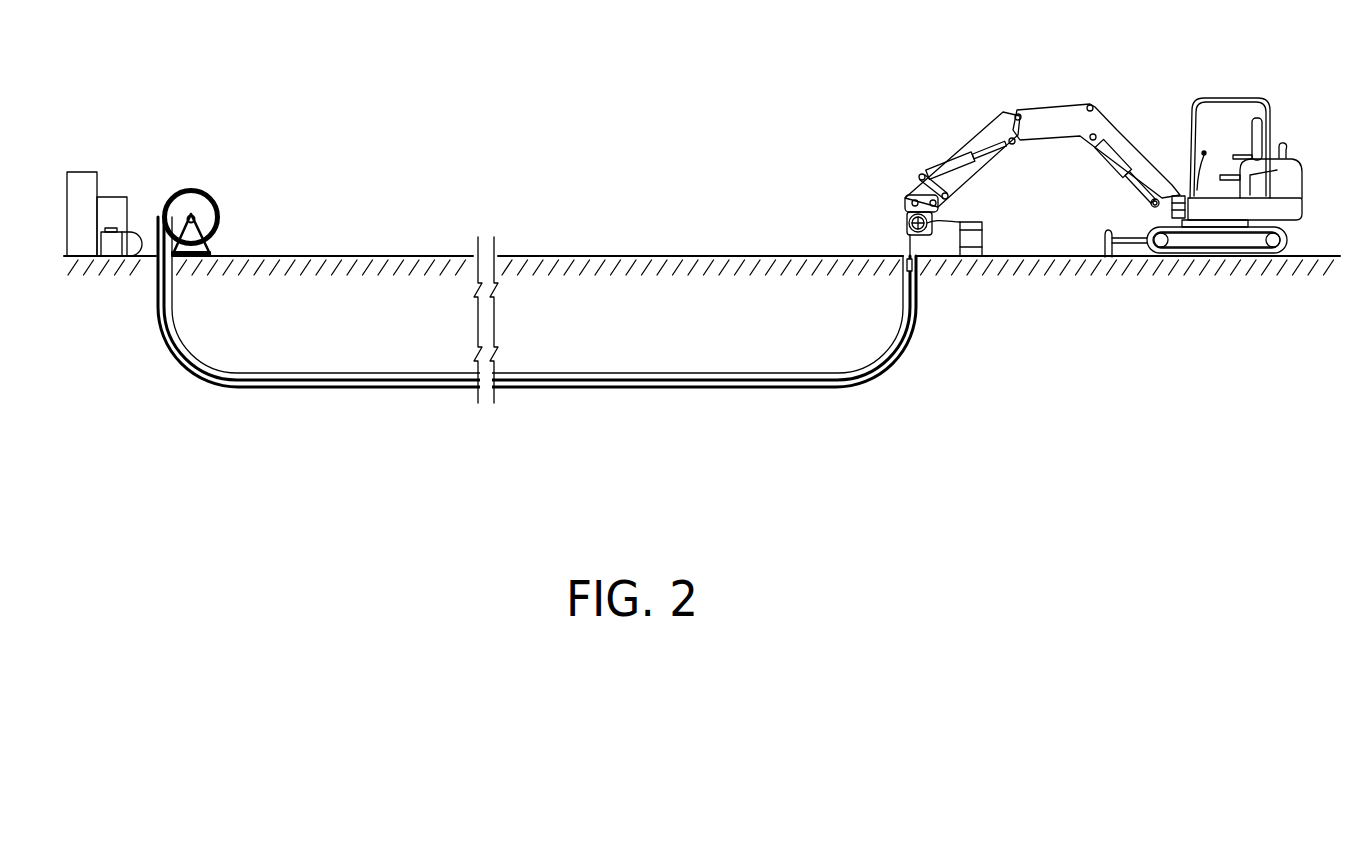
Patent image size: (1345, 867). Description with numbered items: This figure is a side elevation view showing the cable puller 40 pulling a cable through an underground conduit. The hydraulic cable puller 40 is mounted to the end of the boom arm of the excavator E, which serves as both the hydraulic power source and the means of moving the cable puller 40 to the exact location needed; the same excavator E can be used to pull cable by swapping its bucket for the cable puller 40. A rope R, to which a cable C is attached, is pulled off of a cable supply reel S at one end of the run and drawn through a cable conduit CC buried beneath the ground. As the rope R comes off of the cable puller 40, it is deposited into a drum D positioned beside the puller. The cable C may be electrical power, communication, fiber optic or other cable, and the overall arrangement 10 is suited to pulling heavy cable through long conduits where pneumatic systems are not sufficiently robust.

The cable installation apparatus 10 is at (1170, 105).
The hydraulic cable puller 40 is at (896, 209).
The cable supply reel S is at (206, 211).
The cable conduit CC is at (358, 389).
The cable C is at (705, 389).
The rope R is at (940, 221).
The drum D is at (973, 240).
The excavator E is at (1293, 115).